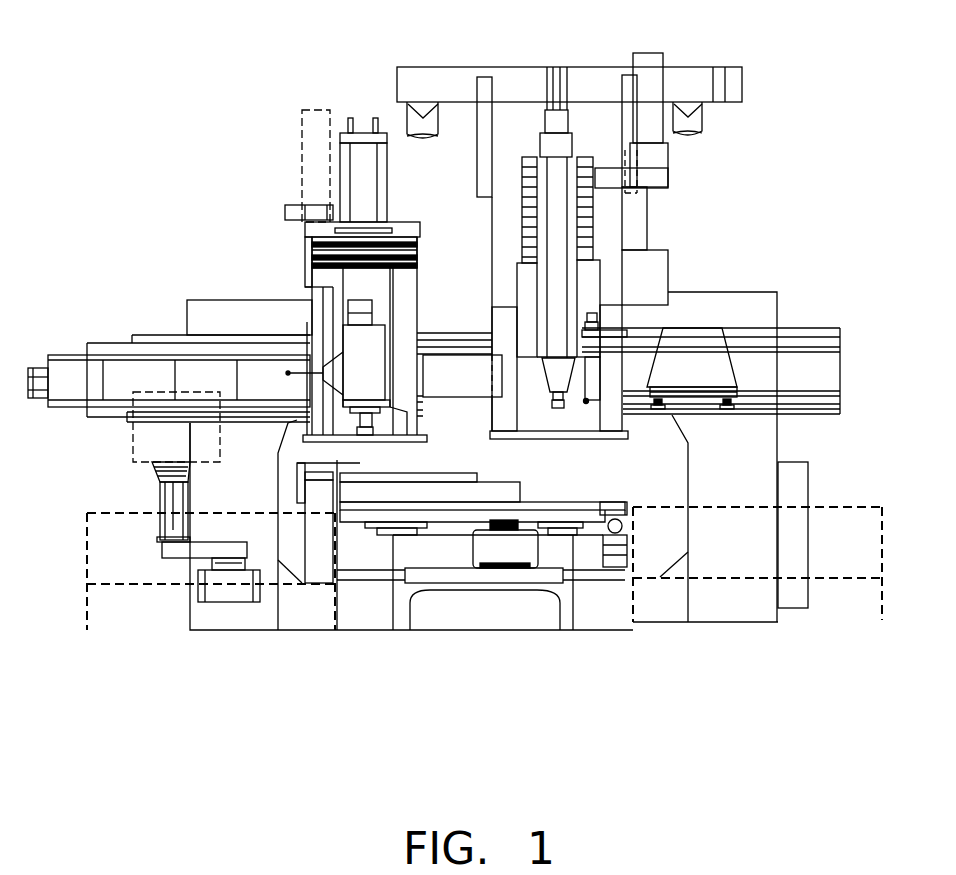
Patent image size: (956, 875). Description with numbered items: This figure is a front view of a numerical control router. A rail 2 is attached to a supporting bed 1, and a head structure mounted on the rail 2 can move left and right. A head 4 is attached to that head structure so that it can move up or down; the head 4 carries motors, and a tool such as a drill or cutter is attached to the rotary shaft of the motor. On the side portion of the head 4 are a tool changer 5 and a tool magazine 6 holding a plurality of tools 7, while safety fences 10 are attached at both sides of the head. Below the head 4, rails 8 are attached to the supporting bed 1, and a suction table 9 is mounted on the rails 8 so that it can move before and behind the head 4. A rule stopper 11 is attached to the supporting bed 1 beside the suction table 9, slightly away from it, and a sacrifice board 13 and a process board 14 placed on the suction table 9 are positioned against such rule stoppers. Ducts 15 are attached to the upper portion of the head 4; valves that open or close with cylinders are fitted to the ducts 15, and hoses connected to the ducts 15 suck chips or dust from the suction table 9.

The supporting bed 1 is at (615, 613).
The rail 2 is at (835, 368).
The head 4 is at (558, 270).
The tool changer 5 is at (593, 392).
The tool magazine 6 is at (707, 340).
The tools 7 is at (730, 408).
The rails 8 is at (587, 535).
The suction table 9 is at (617, 507).
The safety fences 10 is at (148, 568).
The rule stopper 11 is at (313, 490).
The sacrifice board 13 is at (453, 498).
The process board 14 is at (348, 477).
The ducts 15 is at (450, 77).